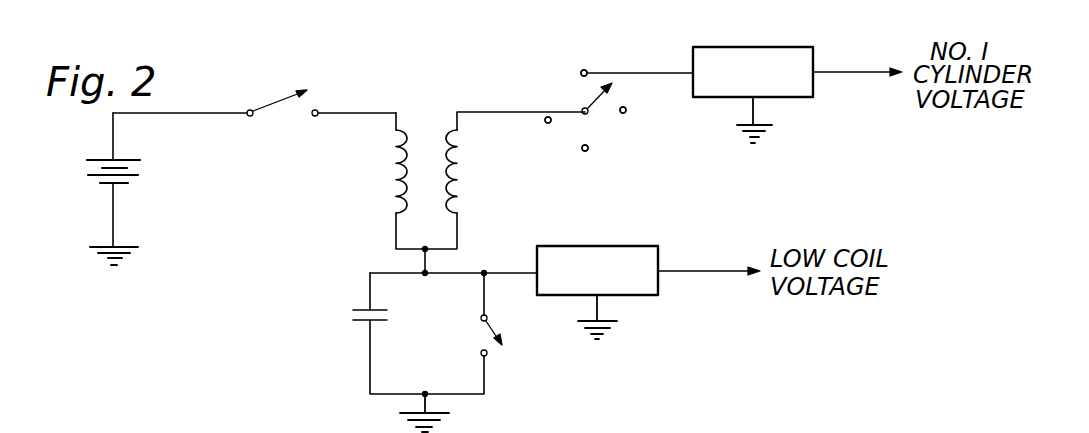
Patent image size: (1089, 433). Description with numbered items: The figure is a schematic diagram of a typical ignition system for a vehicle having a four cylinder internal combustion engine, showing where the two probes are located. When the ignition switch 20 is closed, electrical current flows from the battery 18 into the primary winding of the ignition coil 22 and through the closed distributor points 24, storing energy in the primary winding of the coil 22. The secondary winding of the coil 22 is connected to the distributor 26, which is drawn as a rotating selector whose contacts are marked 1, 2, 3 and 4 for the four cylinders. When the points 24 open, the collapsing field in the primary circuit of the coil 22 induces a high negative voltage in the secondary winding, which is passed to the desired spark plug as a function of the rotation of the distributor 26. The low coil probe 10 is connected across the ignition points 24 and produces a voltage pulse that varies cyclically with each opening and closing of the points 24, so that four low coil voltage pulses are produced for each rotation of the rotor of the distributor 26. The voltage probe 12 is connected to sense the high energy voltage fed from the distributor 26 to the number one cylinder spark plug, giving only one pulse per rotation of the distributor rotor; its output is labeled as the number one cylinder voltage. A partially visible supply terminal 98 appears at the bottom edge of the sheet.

The low coil voltage probe 10 is at (643, 292).
The No. 1 cylinder voltage probe 12 is at (794, 93).
The battery 18 is at (140, 170).
The ignition switch 20 is at (281, 104).
The ignition coil (transformer) 22 is at (422, 137).
The breaker points switch 24 is at (486, 329).
The distributor selector switch 26 is at (612, 132).
The distributor contact 1 is at (586, 59).
The distributor contact 2 is at (632, 111).
The distributor contact 3 is at (581, 162).
The distributor contact 4 is at (535, 131).
The supply voltage terminal (partial) 98 is at (817, 419).